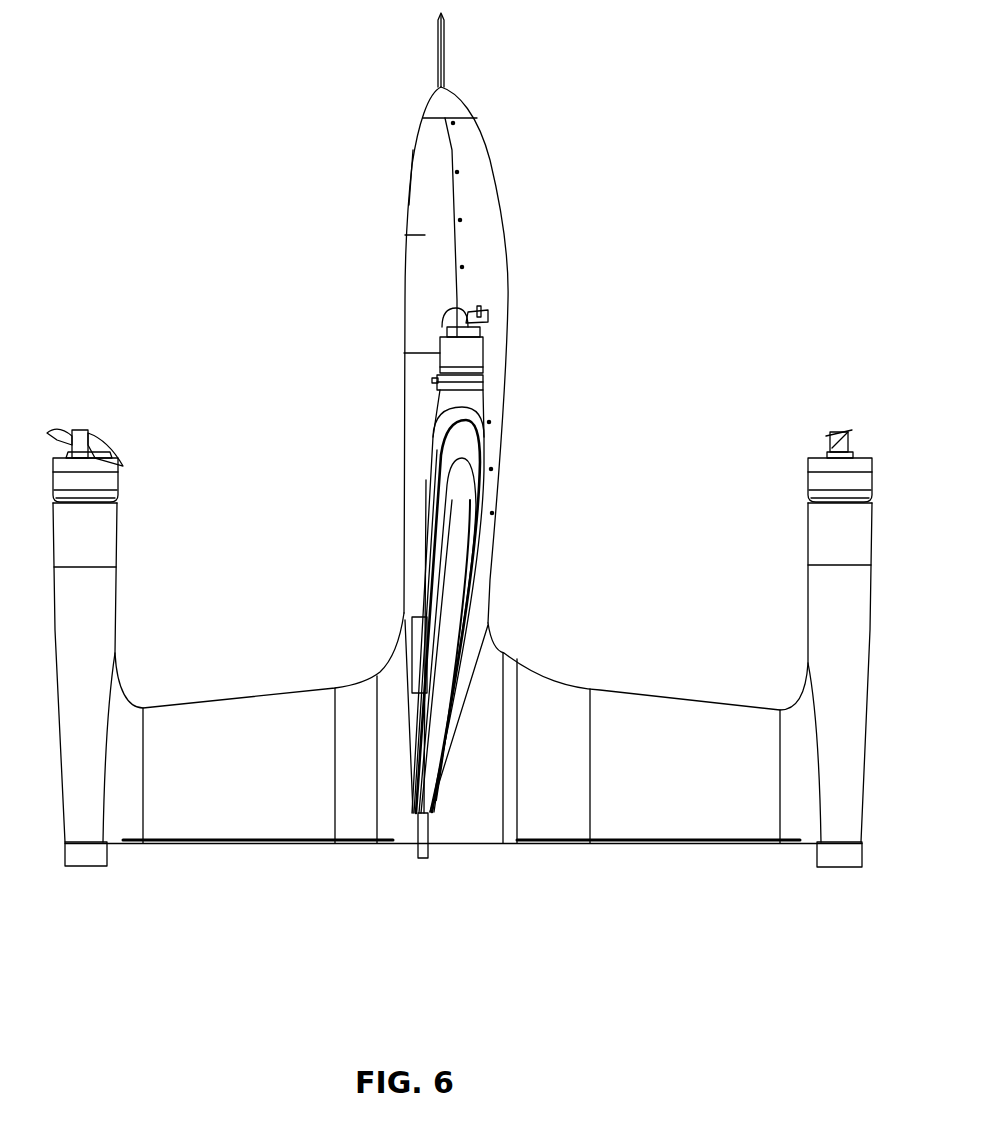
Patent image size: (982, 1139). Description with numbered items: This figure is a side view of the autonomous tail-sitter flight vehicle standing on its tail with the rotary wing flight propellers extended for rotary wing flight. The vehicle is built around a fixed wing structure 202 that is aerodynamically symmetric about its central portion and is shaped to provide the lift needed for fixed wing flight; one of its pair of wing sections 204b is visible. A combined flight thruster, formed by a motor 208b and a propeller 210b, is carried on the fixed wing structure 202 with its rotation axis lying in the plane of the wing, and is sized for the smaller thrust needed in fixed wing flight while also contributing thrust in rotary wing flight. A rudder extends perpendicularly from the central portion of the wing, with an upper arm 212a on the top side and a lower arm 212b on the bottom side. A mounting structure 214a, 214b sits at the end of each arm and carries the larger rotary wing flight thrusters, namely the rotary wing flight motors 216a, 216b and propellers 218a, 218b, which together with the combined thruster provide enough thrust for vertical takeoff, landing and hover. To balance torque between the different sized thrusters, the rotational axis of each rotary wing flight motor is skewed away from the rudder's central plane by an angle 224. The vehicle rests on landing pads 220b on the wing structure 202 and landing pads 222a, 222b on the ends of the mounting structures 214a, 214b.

The fixed wing structure 202 is at (470, 106).
The angle 224 is at (412, 178).
The propeller 210b is at (445, 318).
The motor 208b is at (483, 355).
The wing section 204b is at (468, 527).
The landing pad 220b is at (416, 858).
The lower arm 212b is at (256, 696).
The upper arm 212a is at (686, 696).
The mounting structure 214b is at (100, 606).
The mounting structure 214a is at (808, 585).
The rotary wing flight motor 216b is at (118, 487).
The rotary wing flight motor 216a is at (808, 472).
The propeller 218b is at (108, 442).
The propeller 218a is at (846, 428).
The landing pad 222b is at (87, 866).
The landing pad 222a is at (838, 867).